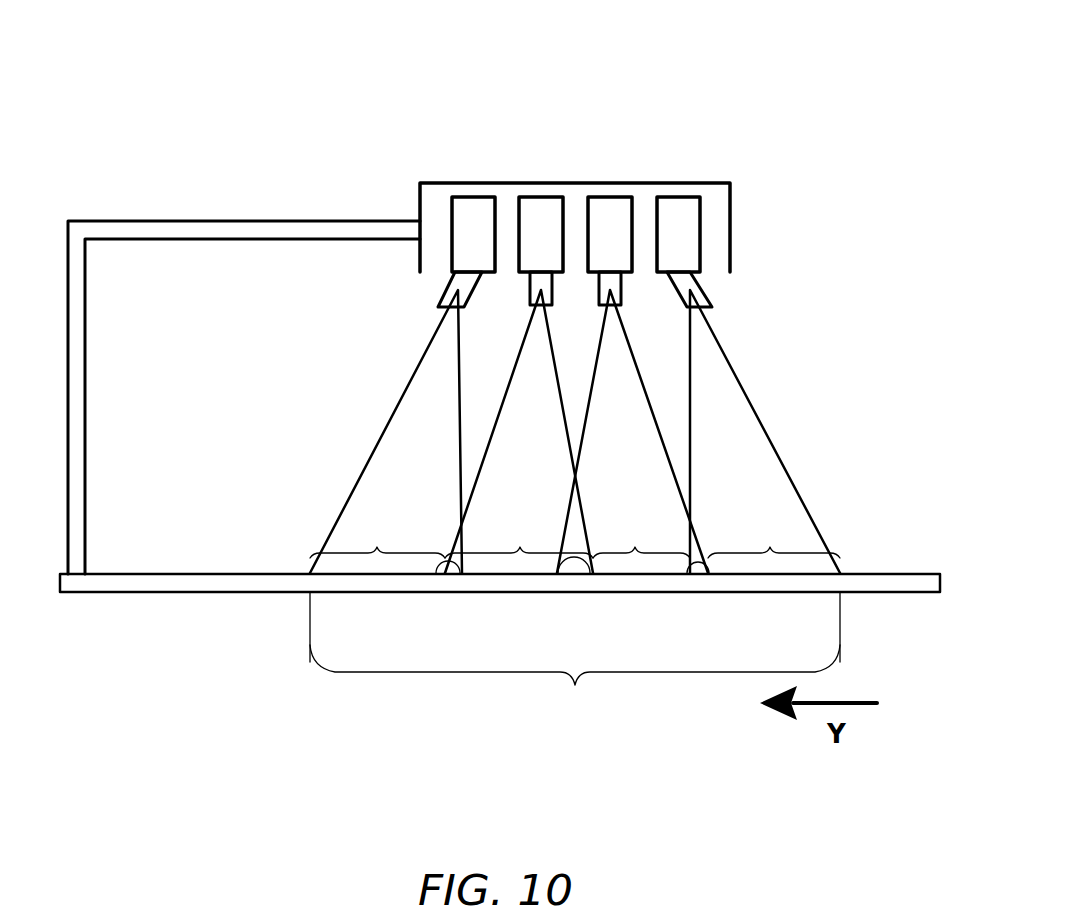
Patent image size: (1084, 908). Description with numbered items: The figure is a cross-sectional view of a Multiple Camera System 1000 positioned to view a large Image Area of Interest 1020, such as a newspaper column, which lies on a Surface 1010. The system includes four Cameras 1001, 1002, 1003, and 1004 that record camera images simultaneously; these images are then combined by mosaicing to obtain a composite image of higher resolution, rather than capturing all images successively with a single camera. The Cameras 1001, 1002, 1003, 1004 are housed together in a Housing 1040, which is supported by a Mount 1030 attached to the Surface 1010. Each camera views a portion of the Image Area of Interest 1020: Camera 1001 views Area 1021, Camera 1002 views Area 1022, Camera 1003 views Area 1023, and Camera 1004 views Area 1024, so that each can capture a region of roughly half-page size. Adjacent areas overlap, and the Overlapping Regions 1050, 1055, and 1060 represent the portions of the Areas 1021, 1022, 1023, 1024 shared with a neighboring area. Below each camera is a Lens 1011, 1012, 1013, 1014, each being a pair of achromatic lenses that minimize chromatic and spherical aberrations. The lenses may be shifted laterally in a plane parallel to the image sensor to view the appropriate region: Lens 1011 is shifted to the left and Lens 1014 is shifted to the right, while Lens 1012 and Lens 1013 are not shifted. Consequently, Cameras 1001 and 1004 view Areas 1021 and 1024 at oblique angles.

The Multiple Camera System 1000 is at (752, 58).
The Camera 1001 is at (472, 200).
The Camera 1002 is at (540, 200).
The Camera 1003 is at (608, 200).
The Camera 1004 is at (676, 200).
The Surface 1010 is at (245, 573).
The Lens 1011 is at (456, 280).
The Lens 1012 is at (536, 278).
The Lens 1013 is at (614, 278).
The Lens 1014 is at (692, 280).
The Image Area of Interest 1020 is at (575, 652).
The Area 1021 is at (377, 539).
The Area 1022 is at (519, 539).
The Area 1023 is at (641, 539).
The Area 1024 is at (774, 539).
The Mount 1030 is at (265, 220).
The Housing 1040 is at (731, 232).
The Overlapping Region 1050 is at (447, 578).
The Overlapping Region 1055 is at (573, 578).
The Overlapping Region 1060 is at (698, 578).